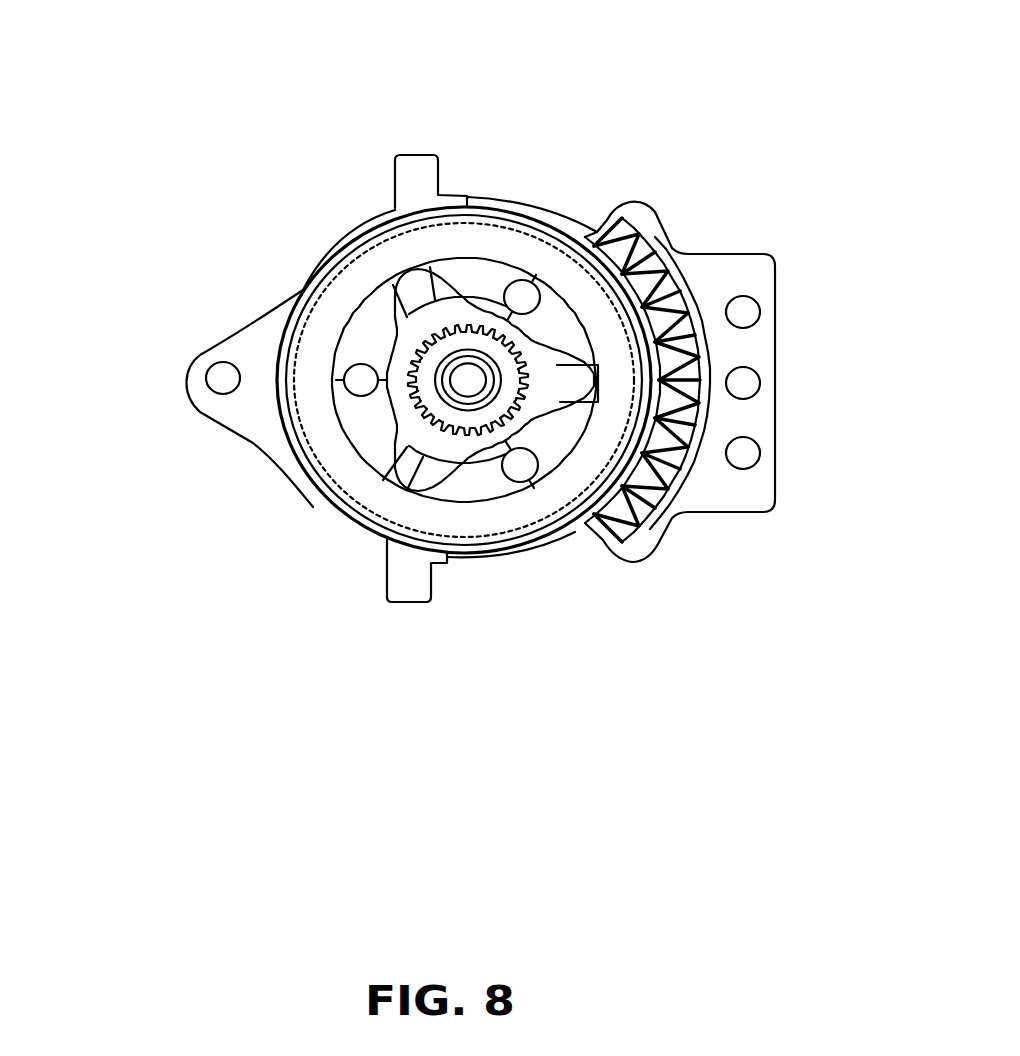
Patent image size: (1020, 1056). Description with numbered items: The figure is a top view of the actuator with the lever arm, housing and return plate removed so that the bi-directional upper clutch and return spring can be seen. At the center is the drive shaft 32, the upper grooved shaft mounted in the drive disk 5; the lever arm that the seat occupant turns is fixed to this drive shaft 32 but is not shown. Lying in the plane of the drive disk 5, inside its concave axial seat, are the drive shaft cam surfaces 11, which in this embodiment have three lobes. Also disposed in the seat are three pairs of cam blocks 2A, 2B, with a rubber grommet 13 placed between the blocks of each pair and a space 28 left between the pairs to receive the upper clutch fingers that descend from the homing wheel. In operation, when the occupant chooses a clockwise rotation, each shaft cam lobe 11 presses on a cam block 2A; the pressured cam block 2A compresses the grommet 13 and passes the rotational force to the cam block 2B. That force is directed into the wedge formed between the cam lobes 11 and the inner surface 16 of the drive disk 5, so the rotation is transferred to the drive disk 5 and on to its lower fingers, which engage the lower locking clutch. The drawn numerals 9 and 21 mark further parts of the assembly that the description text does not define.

The cam block 2A is at (565, 322).
The cam block 2B is at (485, 283).
The drive disk 5 is at (605, 513).
The mounting bracket 9 is at (667, 252).
The drive shaft cam surfaces 11 is at (427, 445).
The rubber grommets 13 is at (521, 290).
The inner surface of drive disk 16 is at (410, 462).
The brake assembly 21 is at (186, 444).
The spaces 28 is at (410, 287).
The drive shaft 32 is at (487, 422).